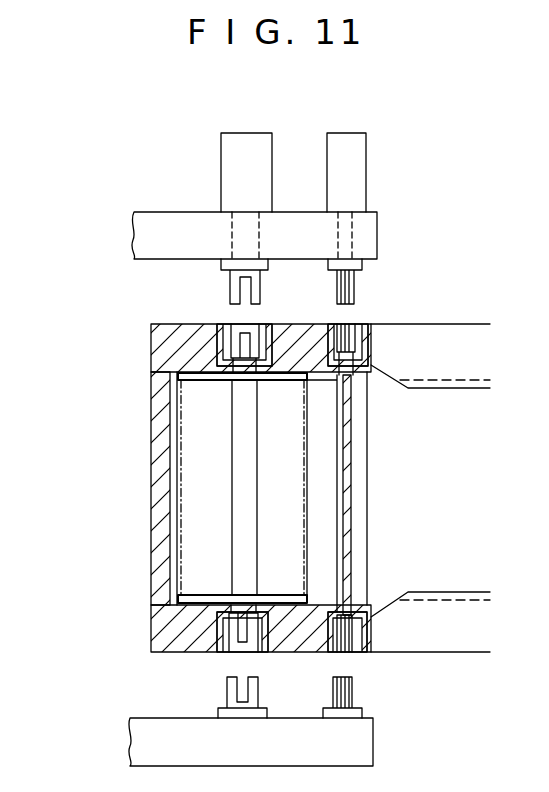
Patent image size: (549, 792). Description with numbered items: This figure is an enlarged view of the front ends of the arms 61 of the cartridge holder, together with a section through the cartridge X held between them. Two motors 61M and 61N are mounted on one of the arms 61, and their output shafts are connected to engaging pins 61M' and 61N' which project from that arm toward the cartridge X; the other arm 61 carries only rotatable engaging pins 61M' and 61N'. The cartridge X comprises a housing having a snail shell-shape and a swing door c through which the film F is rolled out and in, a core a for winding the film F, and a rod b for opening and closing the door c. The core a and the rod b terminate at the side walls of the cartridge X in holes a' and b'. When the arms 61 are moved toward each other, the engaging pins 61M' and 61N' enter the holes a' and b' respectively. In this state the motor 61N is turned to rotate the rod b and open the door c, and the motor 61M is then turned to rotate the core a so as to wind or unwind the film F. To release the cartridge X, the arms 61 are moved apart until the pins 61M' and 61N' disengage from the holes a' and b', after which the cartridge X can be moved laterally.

The arm 61 is at (142, 228).
The motor 61M is at (199, 165).
The motor 61N is at (391, 172).
The engaging pin 61M' is at (195, 281).
The engaging pin 61N' is at (394, 281).
The cartridge X is at (158, 355).
The core a is at (169, 487).
The hole a' is at (202, 521).
The rod b is at (388, 495).
The hole b' is at (381, 521).
The swing door c is at (360, 425).
The film F is at (185, 494).